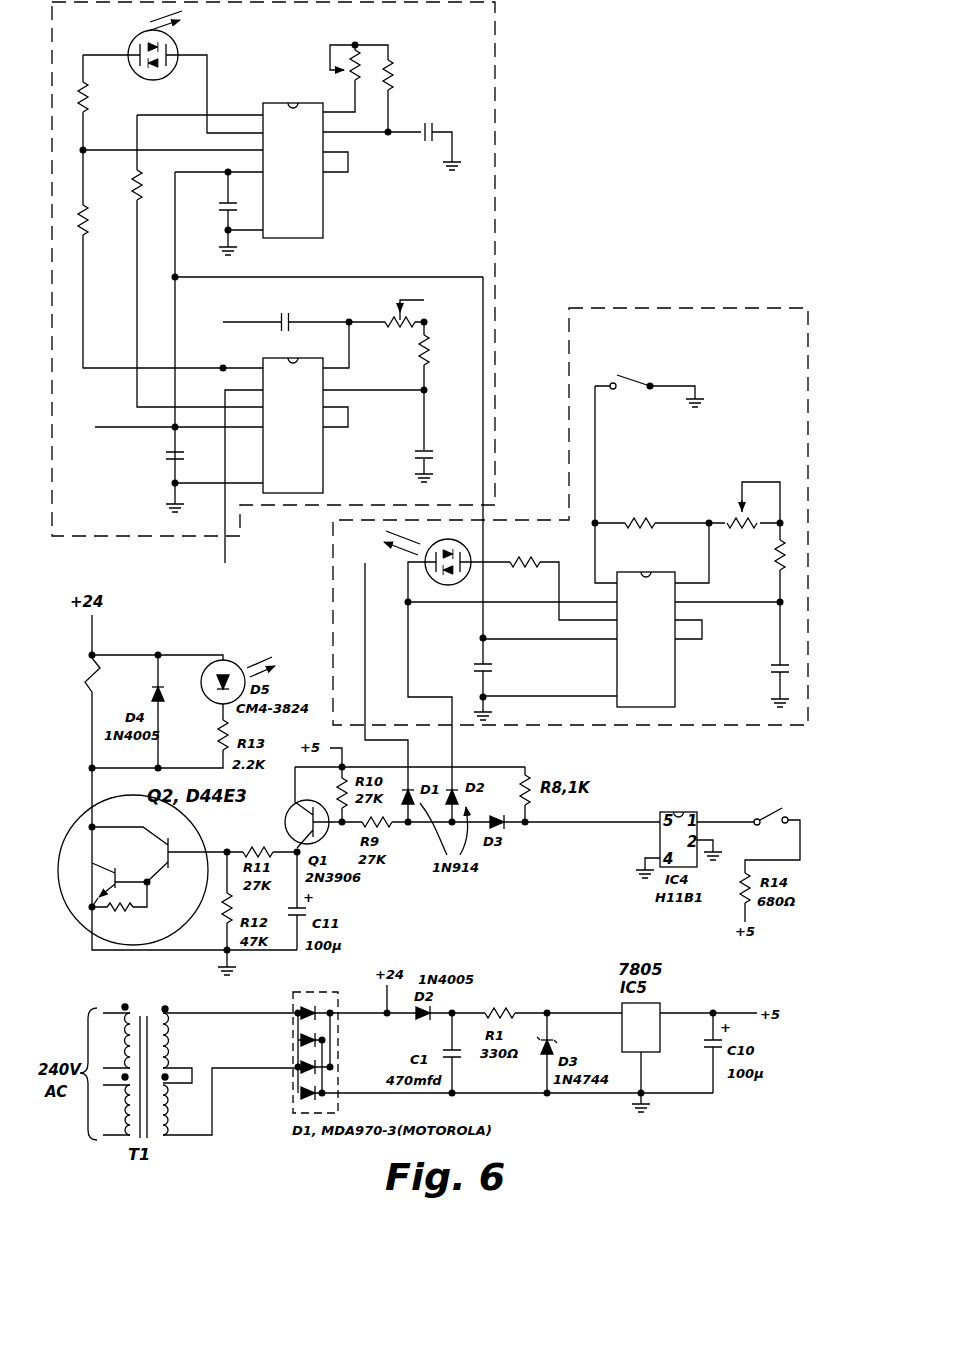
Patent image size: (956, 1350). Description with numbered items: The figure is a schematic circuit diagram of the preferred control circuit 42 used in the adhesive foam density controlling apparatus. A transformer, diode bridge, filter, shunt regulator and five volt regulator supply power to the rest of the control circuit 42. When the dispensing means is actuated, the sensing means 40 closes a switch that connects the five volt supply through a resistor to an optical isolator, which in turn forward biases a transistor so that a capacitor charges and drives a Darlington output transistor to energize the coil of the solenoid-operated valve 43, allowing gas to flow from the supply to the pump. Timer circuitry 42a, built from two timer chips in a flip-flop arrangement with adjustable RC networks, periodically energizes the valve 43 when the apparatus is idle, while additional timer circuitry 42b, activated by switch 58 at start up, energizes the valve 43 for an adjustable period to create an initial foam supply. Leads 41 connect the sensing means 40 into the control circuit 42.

The control circuit 42 is at (670, 165).
The timer circuitry 42a is at (500, 63).
The additional timer circuitry 42b is at (570, 541).
The solenoid-operated valve 43 is at (84, 674).
The switch 58 is at (632, 373).
The sensing means 40 is at (782, 806).
The sensor leads 41 is at (745, 857).